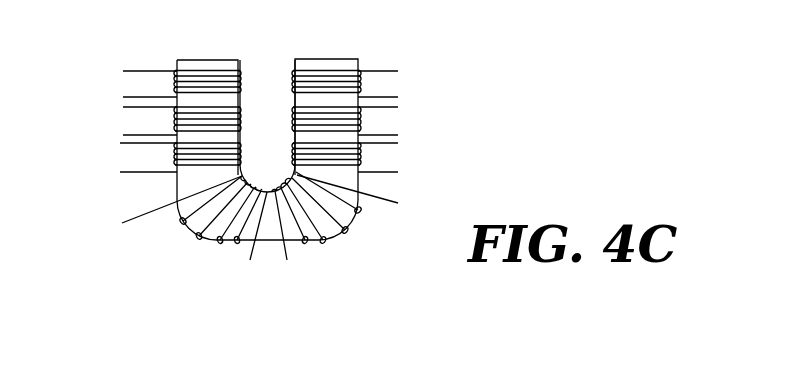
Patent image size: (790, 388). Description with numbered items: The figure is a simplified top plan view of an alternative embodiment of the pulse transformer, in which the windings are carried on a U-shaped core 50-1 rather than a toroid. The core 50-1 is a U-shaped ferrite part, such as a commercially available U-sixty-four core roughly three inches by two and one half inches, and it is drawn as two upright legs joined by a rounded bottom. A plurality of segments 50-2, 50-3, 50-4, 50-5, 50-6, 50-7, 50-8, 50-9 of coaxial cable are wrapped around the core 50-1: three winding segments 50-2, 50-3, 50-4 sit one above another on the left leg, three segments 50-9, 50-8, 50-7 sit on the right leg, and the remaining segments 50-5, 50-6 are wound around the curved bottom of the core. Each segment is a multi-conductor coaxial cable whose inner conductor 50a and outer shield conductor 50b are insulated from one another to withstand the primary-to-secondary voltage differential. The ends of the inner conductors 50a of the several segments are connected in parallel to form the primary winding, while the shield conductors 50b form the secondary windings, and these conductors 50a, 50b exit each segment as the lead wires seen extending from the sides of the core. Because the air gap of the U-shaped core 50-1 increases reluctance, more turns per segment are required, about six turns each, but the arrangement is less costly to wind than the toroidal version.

The core 50-1 is at (330, 59).
The coaxial cable segment 50-2 is at (136, 87).
The coaxial cable segment 50-3 is at (136, 121).
The coaxial cable segment 50-4 is at (136, 158).
The coaxial cable segment 50-5 is at (150, 243).
The coaxial cable segment 50-6 is at (367, 231).
The coaxial cable segment 50-7 is at (385, 158).
The coaxial cable segment 50-8 is at (385, 123).
The coaxial cable segment 50-9 is at (384, 87).
The inner conductor 50a is at (151, 62).
The secondary conductor 50b is at (386, 172).